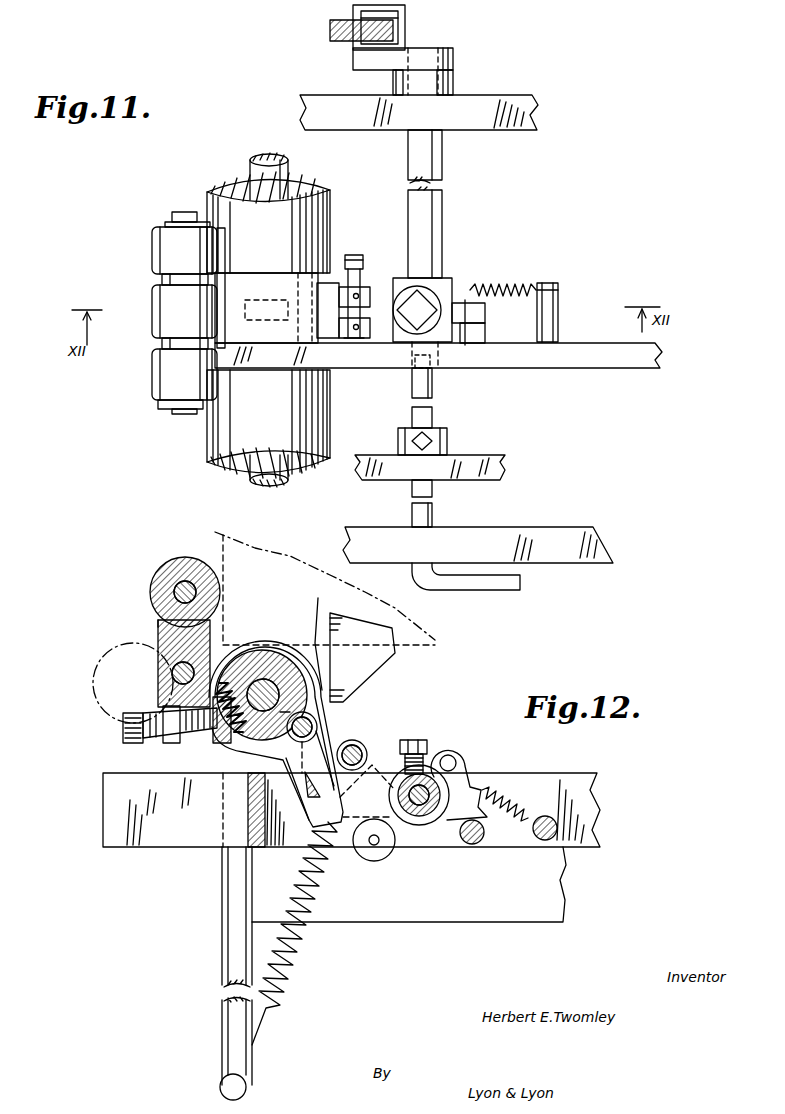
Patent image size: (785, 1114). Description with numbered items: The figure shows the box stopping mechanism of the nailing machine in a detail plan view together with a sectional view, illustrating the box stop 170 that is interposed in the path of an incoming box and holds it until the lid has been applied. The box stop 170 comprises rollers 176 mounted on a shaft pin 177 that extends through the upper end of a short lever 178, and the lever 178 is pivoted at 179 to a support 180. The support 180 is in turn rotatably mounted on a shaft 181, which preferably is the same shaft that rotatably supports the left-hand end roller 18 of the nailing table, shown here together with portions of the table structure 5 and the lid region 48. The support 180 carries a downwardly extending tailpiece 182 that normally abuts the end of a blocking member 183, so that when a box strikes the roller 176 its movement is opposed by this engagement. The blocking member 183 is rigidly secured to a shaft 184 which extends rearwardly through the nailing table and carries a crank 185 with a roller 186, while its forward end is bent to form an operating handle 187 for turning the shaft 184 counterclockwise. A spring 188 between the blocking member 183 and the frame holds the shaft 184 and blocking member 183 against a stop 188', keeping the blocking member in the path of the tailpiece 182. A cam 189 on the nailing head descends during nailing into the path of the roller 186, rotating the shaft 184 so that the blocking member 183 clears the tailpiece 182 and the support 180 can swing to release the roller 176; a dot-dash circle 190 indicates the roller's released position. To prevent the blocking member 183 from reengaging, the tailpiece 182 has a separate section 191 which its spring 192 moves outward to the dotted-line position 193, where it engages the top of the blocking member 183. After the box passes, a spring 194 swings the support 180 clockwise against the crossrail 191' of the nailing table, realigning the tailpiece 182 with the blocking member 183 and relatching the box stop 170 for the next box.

In FIG. 11, the plate 5 is at (512, 103).
In FIG. 11, the left-hand end roller 18 is at (316, 212).
In FIG. 12, the left-hand end roller 18 is at (256, 648).
In FIG. 12, the lid 48 is at (315, 581).
In FIG. 11, the box stop 170 is at (150, 396).
In FIG. 12, the box stop 170 is at (150, 585).
In FIG. 11, the rollers 176 is at (165, 241).
In FIG. 12, the rollers 176 is at (176, 560).
In FIG. 11, the shaft pin 177 is at (175, 212).
In FIG. 12, the shaft pin 177 is at (220, 592).
In FIG. 11, the short lever 178 is at (162, 279).
In FIG. 12, the short lever 178 is at (205, 655).
In FIG. 12, the pivot 179 is at (172, 665).
In FIG. 11, the support 180 is at (325, 272).
In FIG. 12, the support 180 is at (273, 666).
In FIG. 11, the shaft 181 is at (275, 170).
In FIG. 12, the shaft 181 is at (315, 636).
In FIG. 12, the tailpiece 182 is at (318, 728).
In FIG. 11, the blocking member 183 is at (377, 288).
In FIG. 12, the blocking member 183 is at (366, 757).
In FIG. 11, the shaft 184 is at (428, 222).
In FIG. 12, the shaft 184 is at (432, 786).
In FIG. 11, the crank 185 is at (440, 70).
In FIG. 12, the crank 185 is at (463, 768).
In FIG. 11, the roller 186 is at (405, 18).
In FIG. 12, the roller 186 is at (374, 850).
In FIG. 11, the operating handle 187 is at (504, 578).
In FIG. 11, the spring 188 is at (514, 303).
In FIG. 12, the spring 188 is at (508, 815).
In FIG. 11, the stop 188' is at (489, 322).
In FIG. 11, the cam 189 is at (330, 30).
In FIG. 12, the cam 189 is at (370, 664).
In FIG. 12, the roller path 190 is at (108, 685).
In FIG. 12, the separate section 191 is at (271, 959).
In FIG. 12, the crossrail 191' is at (228, 810).
In FIG. 12, the spring 192 is at (222, 740).
In FIG. 12, the dotted-line position 193 is at (378, 735).
In FIG. 12, the spring 194 is at (296, 955).